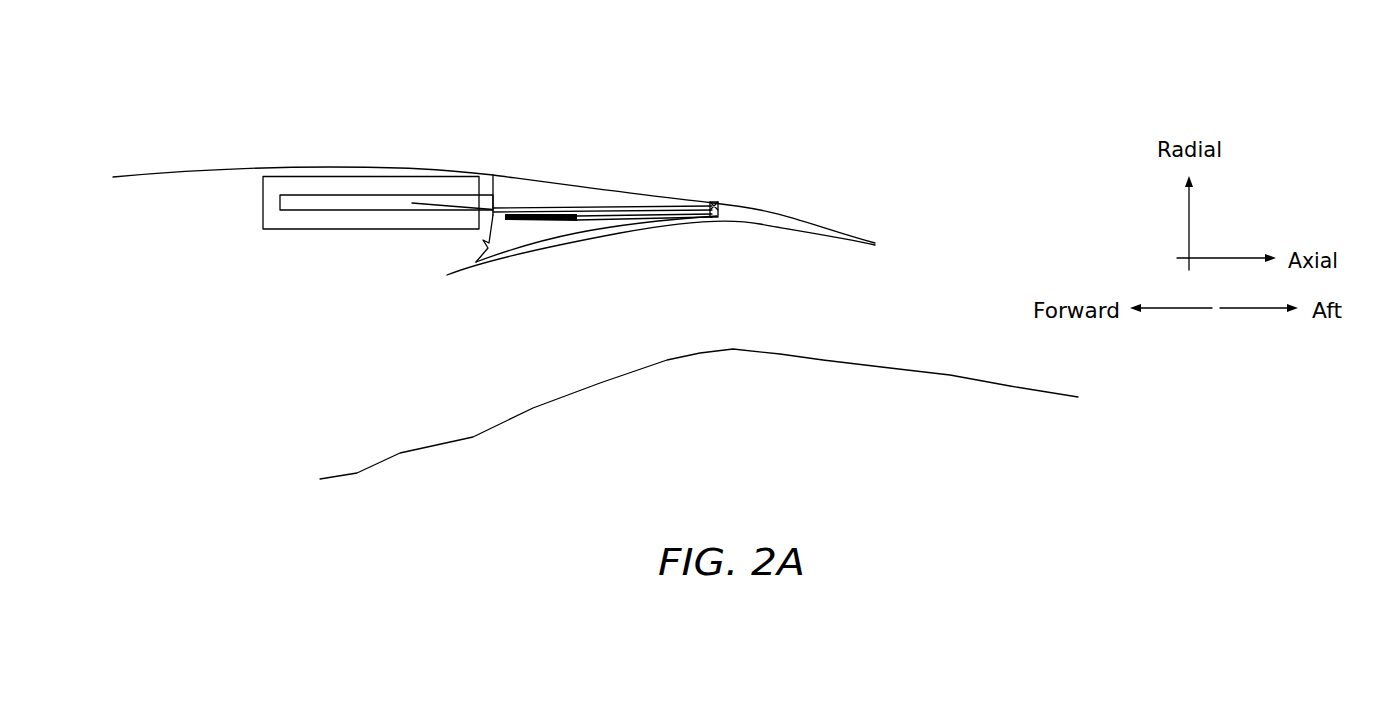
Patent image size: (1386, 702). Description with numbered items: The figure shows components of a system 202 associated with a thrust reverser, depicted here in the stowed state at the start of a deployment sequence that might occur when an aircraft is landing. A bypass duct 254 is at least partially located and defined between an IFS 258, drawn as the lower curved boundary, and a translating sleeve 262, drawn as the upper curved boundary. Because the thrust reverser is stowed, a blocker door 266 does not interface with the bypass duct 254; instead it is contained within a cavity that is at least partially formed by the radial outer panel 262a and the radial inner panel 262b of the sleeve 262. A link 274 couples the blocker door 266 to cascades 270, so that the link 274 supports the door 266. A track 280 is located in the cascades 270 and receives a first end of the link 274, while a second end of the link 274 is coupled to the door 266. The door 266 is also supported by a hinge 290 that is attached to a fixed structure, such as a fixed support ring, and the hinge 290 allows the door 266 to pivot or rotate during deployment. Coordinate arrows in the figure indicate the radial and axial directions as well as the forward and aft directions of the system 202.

The system 202 is at (970, 90).
The bypass duct 254 is at (717, 301).
The IFS 258 is at (950, 375).
The translating sleeve 262 is at (565, 185).
The radial outer panel 262a is at (755, 208).
The radial inner panel 262b is at (552, 247).
The blocker door 266 is at (608, 208).
The cascades 270 is at (353, 177).
The link 274 is at (435, 197).
The track 280 is at (328, 201).
The hinge 290 is at (715, 200).